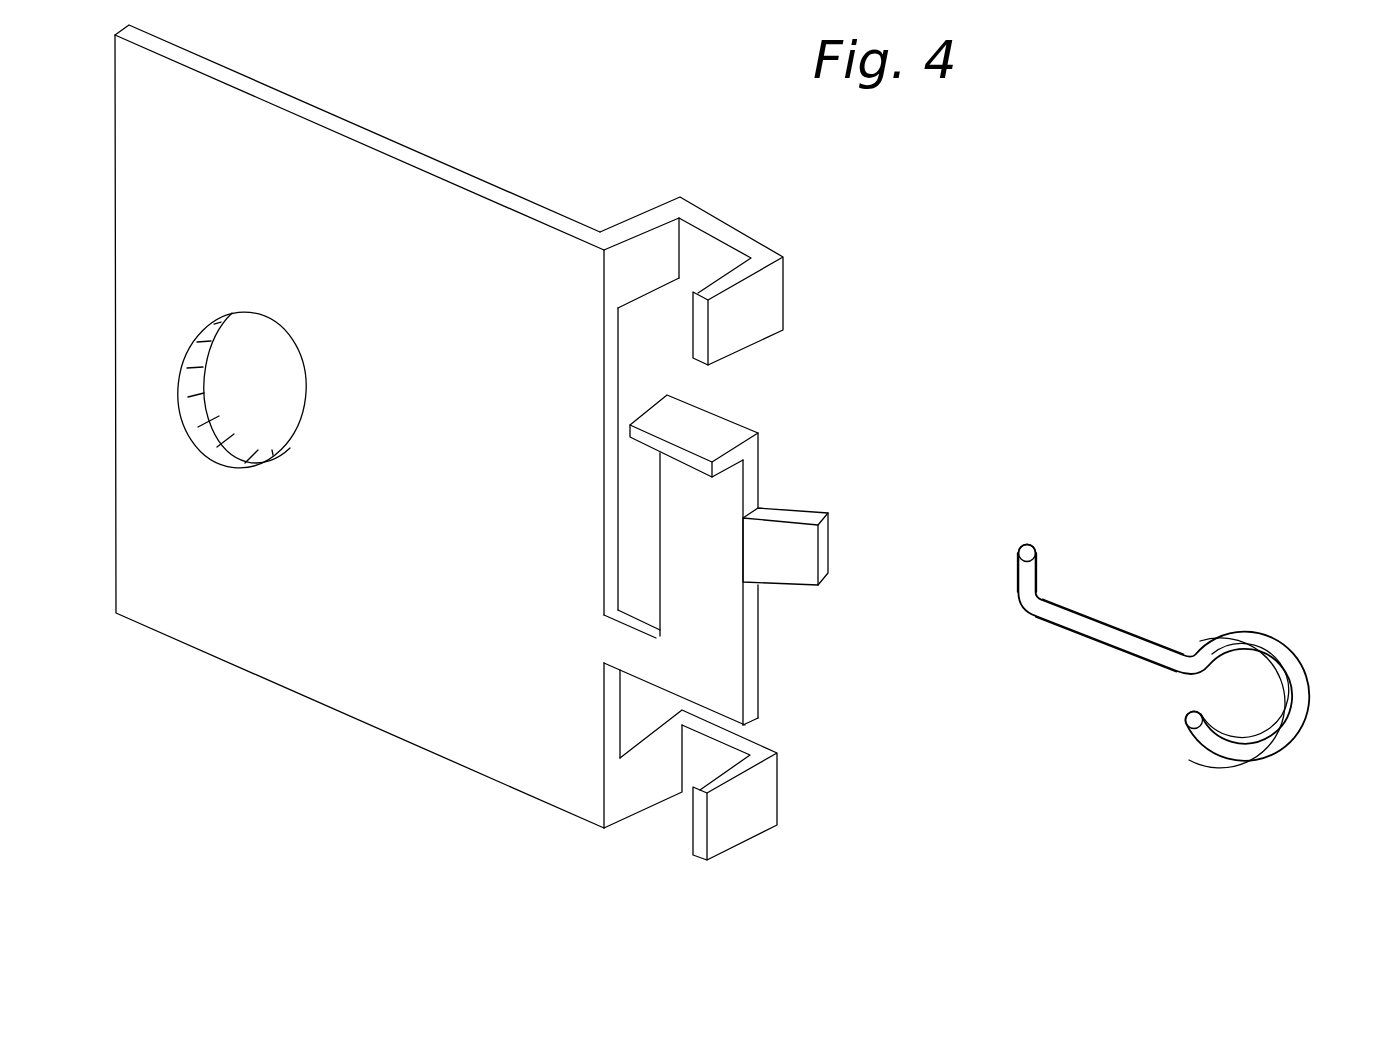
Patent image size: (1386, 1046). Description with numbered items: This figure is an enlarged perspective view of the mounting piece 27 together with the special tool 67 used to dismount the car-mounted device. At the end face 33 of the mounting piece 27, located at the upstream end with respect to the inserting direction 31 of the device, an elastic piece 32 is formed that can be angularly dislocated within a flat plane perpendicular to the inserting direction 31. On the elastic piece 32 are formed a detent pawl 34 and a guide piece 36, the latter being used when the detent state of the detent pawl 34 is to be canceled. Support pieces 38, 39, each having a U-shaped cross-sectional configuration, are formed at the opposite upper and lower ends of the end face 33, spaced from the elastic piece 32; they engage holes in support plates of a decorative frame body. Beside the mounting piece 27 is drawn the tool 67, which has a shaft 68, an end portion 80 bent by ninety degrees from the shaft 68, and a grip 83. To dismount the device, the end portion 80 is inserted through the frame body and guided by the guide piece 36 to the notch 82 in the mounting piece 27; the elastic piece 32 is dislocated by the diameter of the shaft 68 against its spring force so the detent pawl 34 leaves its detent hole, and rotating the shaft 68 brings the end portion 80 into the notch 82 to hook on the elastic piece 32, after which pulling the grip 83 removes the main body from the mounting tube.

The mounting piece 27 is at (233, 635).
The inserting direction 31 is at (952, 857).
The elastic piece 32 is at (728, 498).
The end face 33 is at (610, 410).
The detent pawl 34 is at (710, 433).
The guide piece 36 is at (795, 570).
The support piece 38 is at (738, 243).
The support piece 39 is at (727, 832).
The special tool 67 is at (1125, 678).
The shaft 68 is at (1090, 627).
The end portion 80 is at (1017, 576).
The notch 82 is at (633, 513).
The grip 83 is at (1303, 707).